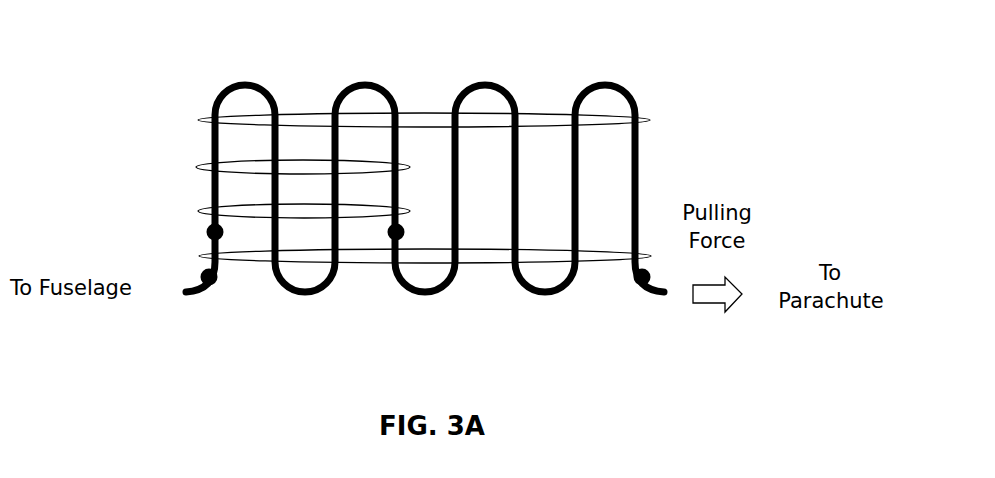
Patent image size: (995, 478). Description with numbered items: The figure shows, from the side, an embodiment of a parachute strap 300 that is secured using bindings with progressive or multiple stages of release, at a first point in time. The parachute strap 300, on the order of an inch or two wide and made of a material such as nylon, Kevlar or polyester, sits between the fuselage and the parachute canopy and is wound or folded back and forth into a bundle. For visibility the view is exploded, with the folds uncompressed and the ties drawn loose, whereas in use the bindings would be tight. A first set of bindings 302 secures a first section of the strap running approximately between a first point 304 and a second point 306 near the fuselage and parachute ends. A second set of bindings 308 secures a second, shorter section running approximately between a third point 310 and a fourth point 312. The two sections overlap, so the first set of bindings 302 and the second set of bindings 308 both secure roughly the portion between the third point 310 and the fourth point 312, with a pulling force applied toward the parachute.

The parachute strap 300 is at (639, 166).
The first set of bindings 302 is at (297, 112).
The second set of bindings 308 is at (197, 166).
The point 2A 310 is at (207, 232).
The point 2B 312 is at (396, 232).
The point 1A 304 is at (209, 277).
The point 1B 306 is at (642, 277).